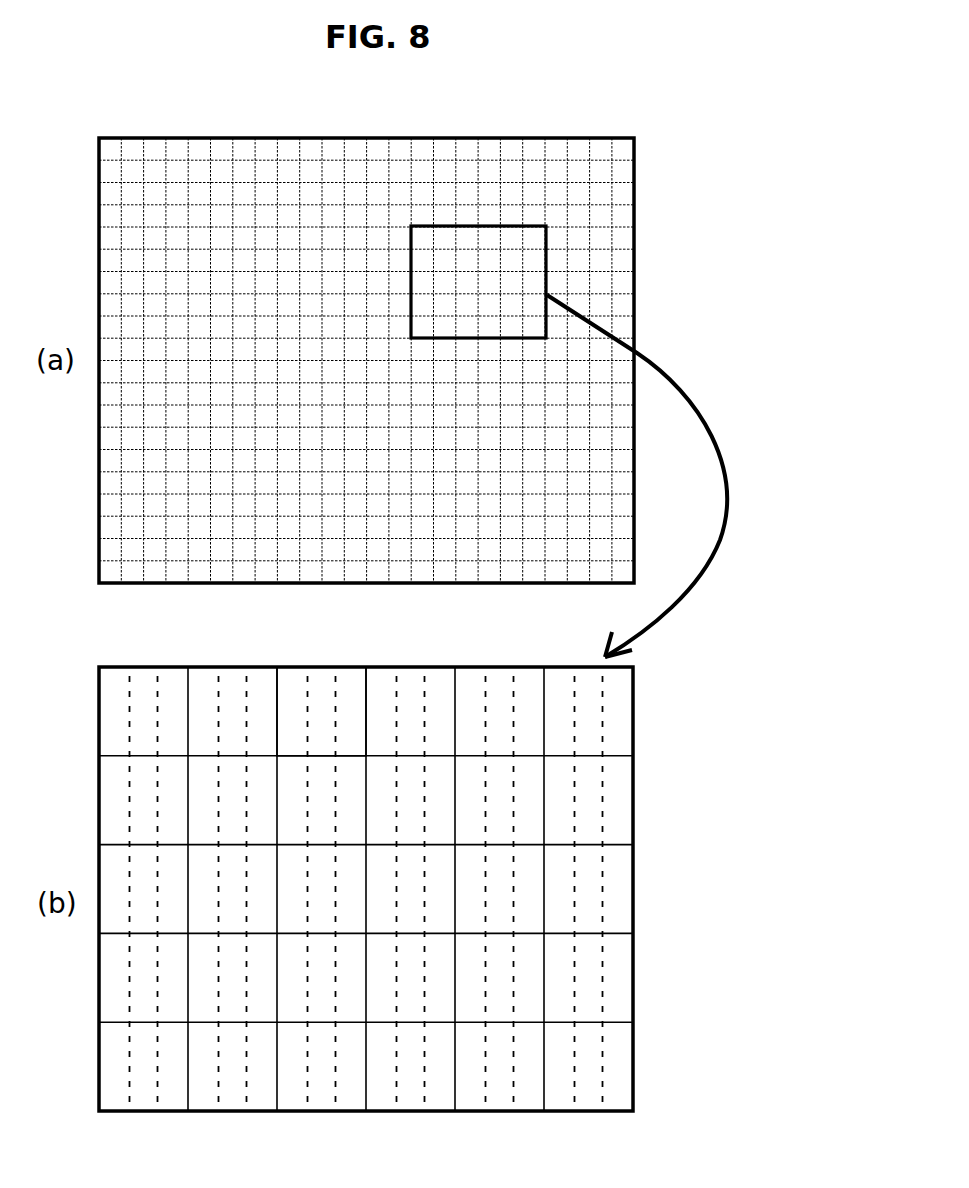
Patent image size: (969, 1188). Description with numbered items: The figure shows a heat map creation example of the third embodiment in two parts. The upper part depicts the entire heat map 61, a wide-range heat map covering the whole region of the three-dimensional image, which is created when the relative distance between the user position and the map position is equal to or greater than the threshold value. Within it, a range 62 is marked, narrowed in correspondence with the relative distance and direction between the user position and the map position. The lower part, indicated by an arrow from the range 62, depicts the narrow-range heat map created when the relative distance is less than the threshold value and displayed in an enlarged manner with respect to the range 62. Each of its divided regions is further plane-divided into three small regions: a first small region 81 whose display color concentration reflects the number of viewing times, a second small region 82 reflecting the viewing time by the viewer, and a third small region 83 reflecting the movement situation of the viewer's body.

The entire heat map 61 is at (245, 135).
The range 62 is at (485, 226).
The first small region 81 is at (293, 682).
The second small region 82 is at (318, 682).
The third small region 83 is at (353, 682).